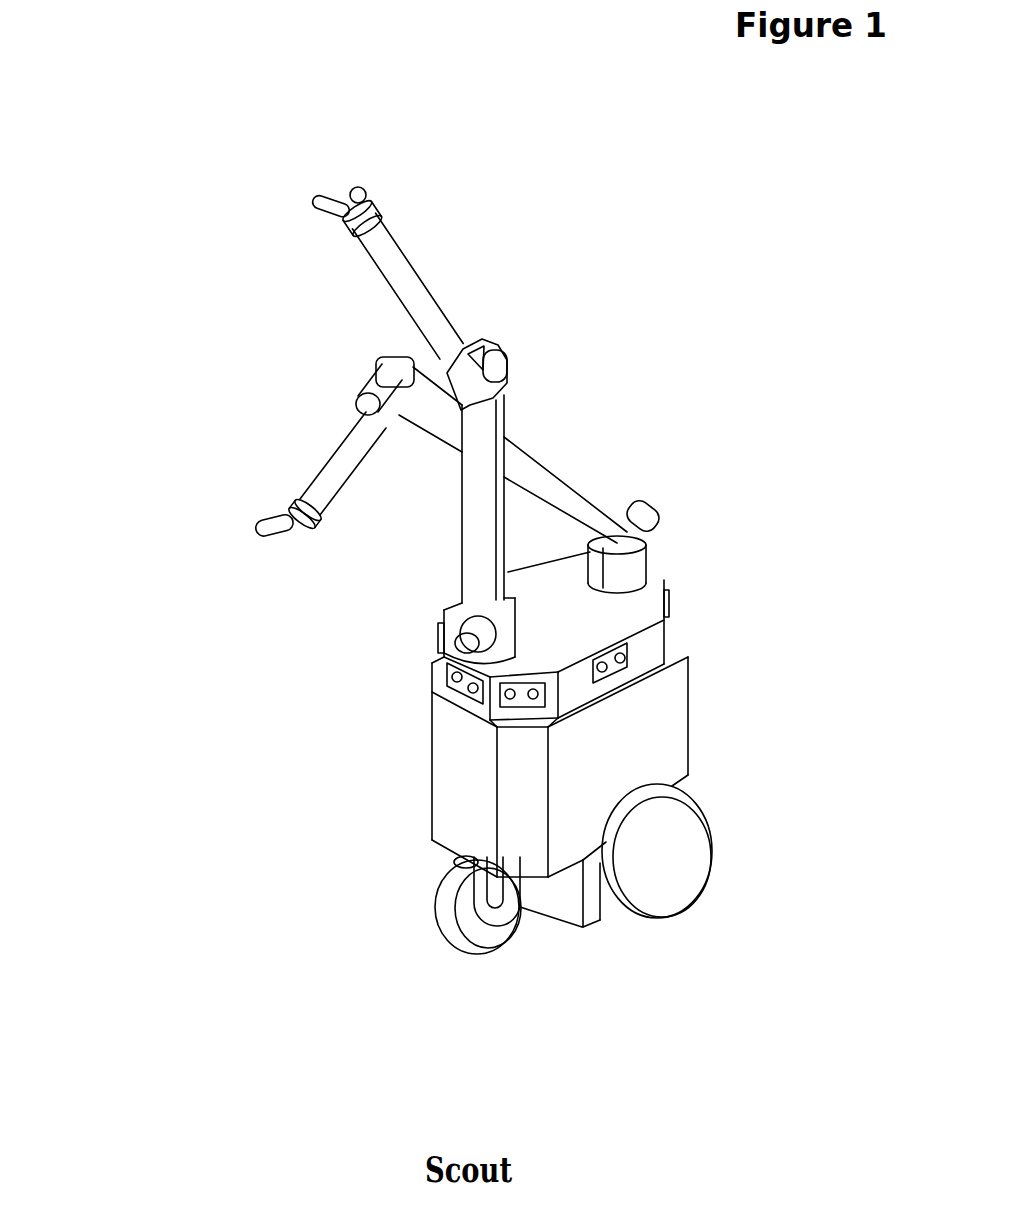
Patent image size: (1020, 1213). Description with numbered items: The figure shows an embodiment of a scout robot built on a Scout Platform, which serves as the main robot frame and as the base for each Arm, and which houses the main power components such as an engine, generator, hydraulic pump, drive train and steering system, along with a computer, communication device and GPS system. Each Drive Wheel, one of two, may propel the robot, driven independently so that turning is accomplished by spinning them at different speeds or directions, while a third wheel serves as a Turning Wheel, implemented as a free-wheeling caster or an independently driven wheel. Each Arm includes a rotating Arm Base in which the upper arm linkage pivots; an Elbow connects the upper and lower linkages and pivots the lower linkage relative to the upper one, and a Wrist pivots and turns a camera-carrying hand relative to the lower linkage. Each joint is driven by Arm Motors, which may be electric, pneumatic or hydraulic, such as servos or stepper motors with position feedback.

The elbow joint Elbow is at (300, 326).
The arm Arm is at (585, 502).
The arm motors Arm Motors is at (643, 515).
The arm base Arm Base is at (712, 560).
The wrist Wrist is at (359, 531).
The scout platform Scout Platform is at (667, 739).
The drive wheel Drive Wheel is at (751, 851).
The turning wheel Turning Wheel is at (584, 926).